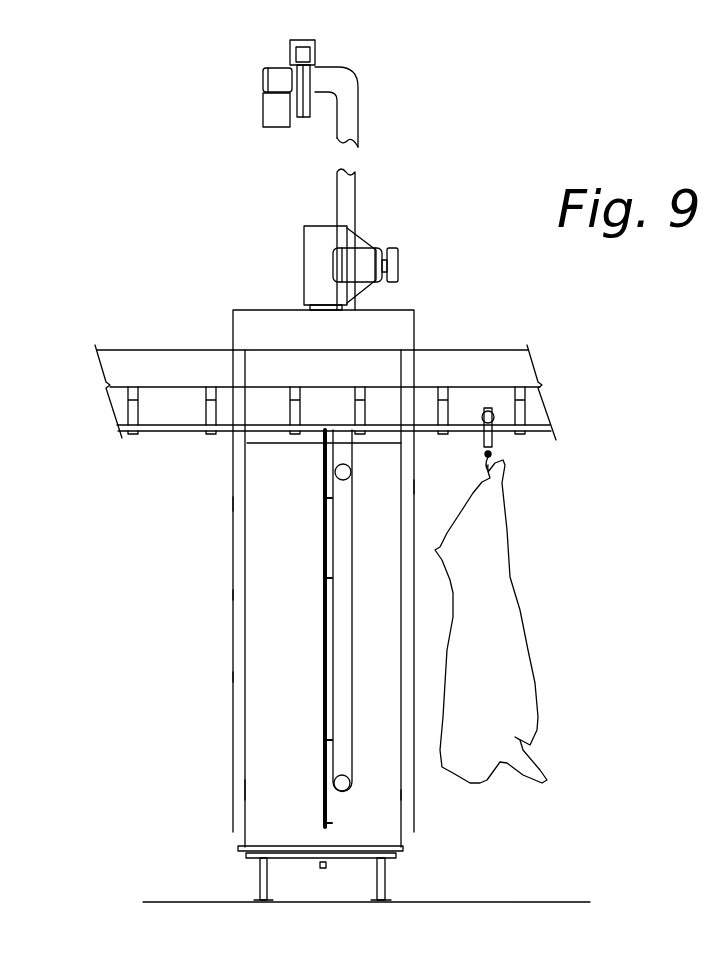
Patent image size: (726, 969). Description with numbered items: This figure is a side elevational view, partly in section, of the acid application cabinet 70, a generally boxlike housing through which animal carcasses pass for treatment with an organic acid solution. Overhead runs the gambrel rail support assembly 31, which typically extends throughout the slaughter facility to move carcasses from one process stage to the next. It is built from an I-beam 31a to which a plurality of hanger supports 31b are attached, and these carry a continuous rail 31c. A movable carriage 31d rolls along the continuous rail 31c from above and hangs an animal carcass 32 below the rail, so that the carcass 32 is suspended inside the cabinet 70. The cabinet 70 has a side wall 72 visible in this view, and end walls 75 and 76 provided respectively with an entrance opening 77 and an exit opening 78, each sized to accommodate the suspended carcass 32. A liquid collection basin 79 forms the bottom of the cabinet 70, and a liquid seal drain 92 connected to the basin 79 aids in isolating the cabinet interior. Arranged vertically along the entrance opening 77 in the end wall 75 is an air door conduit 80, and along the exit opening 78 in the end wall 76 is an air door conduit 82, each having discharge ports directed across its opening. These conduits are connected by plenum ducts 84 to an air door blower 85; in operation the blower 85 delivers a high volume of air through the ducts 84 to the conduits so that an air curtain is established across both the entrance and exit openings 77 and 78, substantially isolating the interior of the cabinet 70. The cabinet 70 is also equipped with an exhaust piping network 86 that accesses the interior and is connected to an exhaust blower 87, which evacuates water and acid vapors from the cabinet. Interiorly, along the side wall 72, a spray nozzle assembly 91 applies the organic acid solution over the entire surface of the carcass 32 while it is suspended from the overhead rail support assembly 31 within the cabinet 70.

The gambrel rail support assembly 31 is at (350, 375).
The I-beam 31a is at (135, 365).
The hanger supports 31b is at (212, 412).
The continuous rail 31c is at (172, 428).
The movable carriage 31d is at (493, 432).
The animal carcass 32 is at (501, 635).
The acid application cabinet 70 is at (183, 592).
The side wall 72 is at (293, 750).
The end wall 75 is at (398, 812).
The end wall 76 is at (245, 779).
The entrance opening 77 is at (420, 487).
The exit opening 78 is at (223, 504).
The liquid collection basin 79 is at (304, 853).
The air door conduit 80 is at (407, 795).
The air door conduit 82 is at (237, 677).
The plenum ducts 84 is at (292, 322).
The air door blower 85 is at (322, 258).
The exhaust piping network 86 is at (345, 203).
The exhaust blower 87 is at (236, 142).
The spray nozzle assembly 91 is at (323, 605).
The liquid seal drain 92 is at (323, 868).